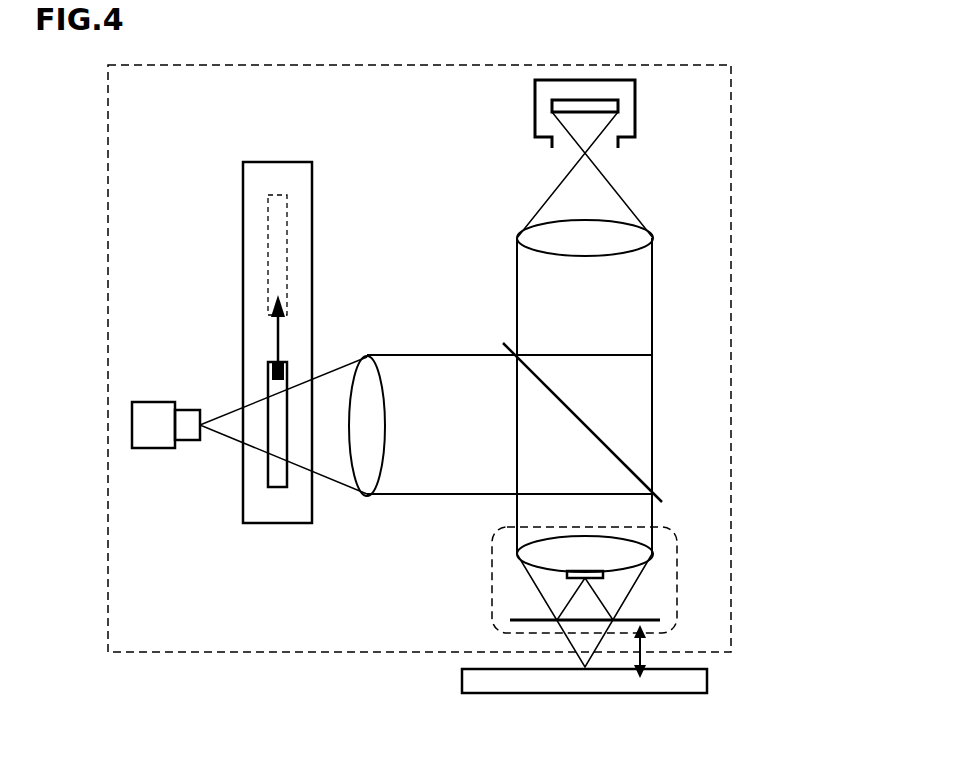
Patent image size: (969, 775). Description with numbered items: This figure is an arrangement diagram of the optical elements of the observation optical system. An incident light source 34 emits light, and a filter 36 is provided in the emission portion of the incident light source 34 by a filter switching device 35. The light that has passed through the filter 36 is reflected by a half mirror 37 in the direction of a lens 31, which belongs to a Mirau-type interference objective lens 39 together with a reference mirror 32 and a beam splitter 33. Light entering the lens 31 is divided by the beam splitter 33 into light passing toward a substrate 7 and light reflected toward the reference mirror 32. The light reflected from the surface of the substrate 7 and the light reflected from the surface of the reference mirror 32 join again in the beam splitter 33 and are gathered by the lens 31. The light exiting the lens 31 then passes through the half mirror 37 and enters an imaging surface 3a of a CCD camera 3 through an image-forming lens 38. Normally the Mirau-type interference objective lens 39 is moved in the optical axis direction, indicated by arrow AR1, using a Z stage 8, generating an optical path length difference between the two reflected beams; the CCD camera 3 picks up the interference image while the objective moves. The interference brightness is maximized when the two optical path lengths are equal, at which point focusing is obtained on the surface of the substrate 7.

The CCD camera 3 is at (603, 80).
The imaging surface 3a is at (618, 106).
The substrate 7 is at (707, 681).
The Z stage 8 is at (731, 300).
The lens 31 is at (652, 556).
The reference mirror 32 is at (603, 574).
The beam splitter 33 is at (660, 618).
The incident light source 34 is at (132, 432).
The filter switching device 35 is at (243, 185).
The filter 36 is at (268, 383).
The half mirror 37 is at (617, 455).
The image-forming lens 38 is at (653, 236).
The Mirau-type interference objective lens 39 is at (677, 541).
The movement direction arrow AR1 is at (647, 655).